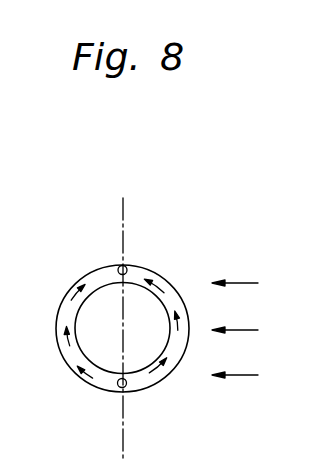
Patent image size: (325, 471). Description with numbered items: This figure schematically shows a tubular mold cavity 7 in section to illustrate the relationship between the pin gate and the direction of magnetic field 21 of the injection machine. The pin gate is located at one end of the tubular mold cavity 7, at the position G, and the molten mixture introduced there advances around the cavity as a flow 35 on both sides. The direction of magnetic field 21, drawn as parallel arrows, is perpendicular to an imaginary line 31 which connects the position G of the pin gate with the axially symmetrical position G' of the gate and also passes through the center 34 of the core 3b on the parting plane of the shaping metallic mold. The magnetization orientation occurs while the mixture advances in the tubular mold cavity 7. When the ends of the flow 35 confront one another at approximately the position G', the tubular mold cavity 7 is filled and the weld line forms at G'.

The tubular mold cavity 7 is at (164, 275).
The imaginary line 31 is at (124, 201).
The core 3b is at (97, 356).
The center of the core 34 is at (123, 330).
The axial symmetrical position of the gate G' is at (142, 253).
The position of the pin gate G is at (136, 410).
The flow 35 is at (90, 384).
The direction of magnetic field 21 is at (243, 375).